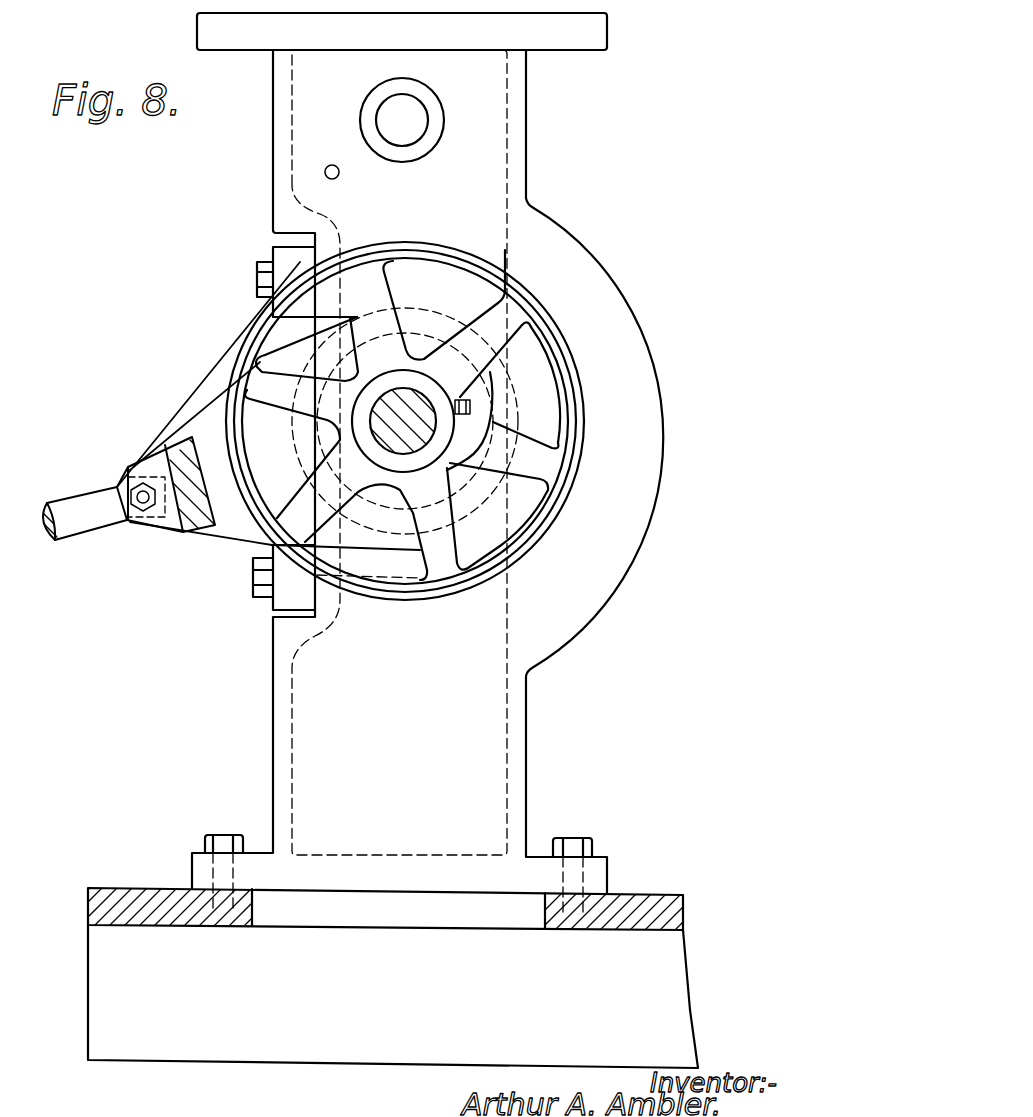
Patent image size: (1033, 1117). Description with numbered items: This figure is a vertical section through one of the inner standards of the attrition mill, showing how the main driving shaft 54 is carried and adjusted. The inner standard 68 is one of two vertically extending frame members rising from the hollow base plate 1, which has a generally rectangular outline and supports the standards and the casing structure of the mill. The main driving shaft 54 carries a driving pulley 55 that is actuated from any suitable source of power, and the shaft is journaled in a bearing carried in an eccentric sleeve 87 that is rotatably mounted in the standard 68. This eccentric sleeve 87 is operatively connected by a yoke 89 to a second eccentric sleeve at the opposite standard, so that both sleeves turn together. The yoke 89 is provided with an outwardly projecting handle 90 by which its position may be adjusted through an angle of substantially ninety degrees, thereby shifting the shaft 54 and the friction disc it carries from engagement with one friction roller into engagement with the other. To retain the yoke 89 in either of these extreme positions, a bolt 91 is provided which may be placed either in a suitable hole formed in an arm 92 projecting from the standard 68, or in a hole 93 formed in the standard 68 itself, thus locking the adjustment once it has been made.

The hollow base plate 1 is at (148, 910).
The main driving shaft 54 is at (435, 435).
The driving pulley 55 is at (400, 597).
The inner standard 68 is at (515, 132).
The eccentric sleeve 87 is at (497, 377).
The yoke 89 is at (213, 530).
The handle 90 is at (90, 520).
The bolt 91 is at (153, 520).
The arm 92 is at (205, 385).
The hole 93 is at (339, 173).